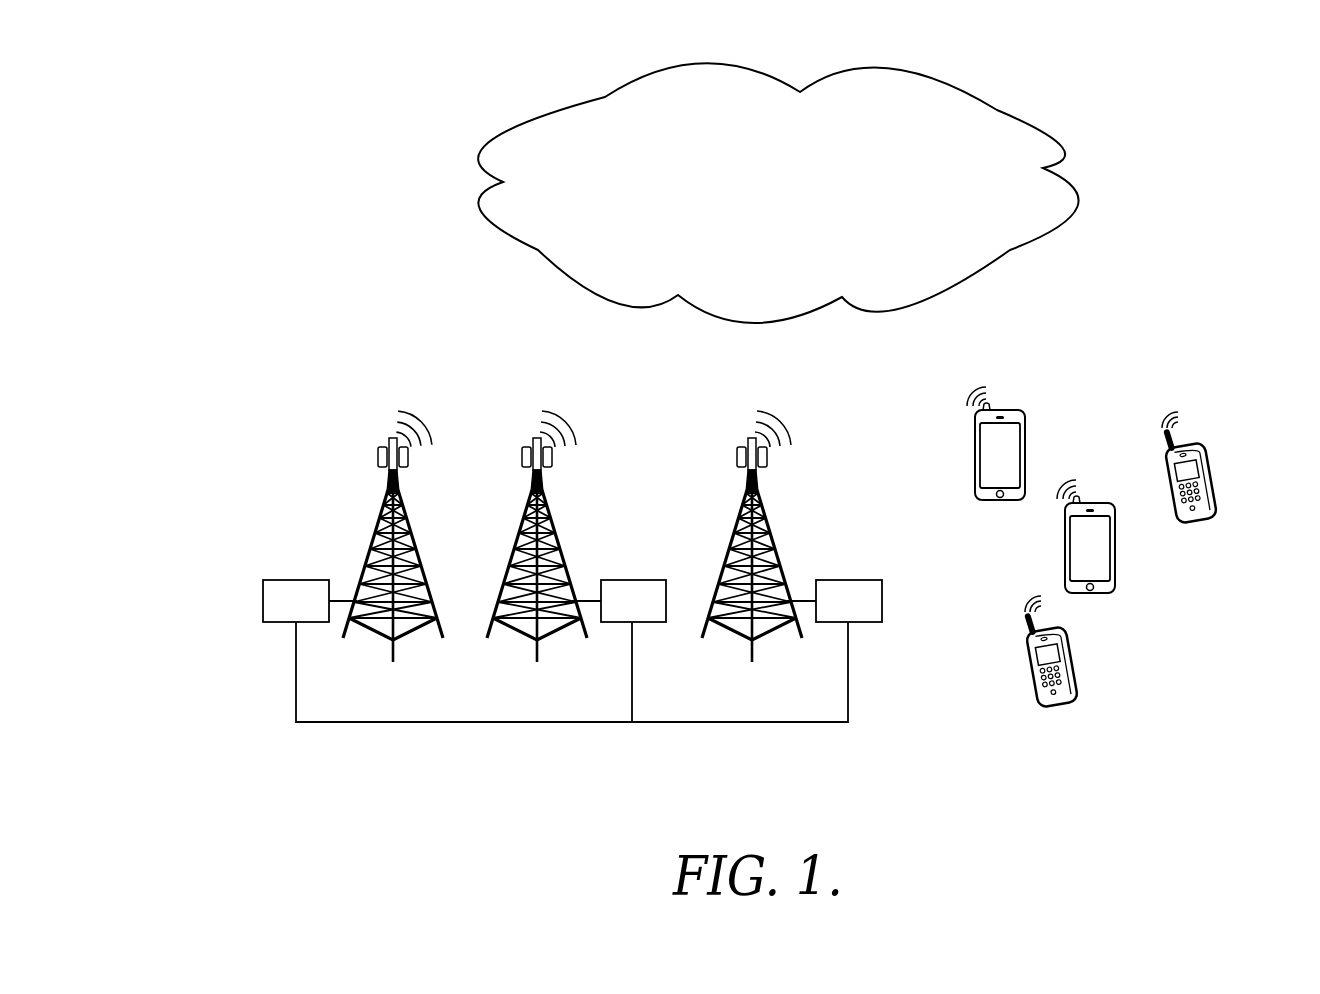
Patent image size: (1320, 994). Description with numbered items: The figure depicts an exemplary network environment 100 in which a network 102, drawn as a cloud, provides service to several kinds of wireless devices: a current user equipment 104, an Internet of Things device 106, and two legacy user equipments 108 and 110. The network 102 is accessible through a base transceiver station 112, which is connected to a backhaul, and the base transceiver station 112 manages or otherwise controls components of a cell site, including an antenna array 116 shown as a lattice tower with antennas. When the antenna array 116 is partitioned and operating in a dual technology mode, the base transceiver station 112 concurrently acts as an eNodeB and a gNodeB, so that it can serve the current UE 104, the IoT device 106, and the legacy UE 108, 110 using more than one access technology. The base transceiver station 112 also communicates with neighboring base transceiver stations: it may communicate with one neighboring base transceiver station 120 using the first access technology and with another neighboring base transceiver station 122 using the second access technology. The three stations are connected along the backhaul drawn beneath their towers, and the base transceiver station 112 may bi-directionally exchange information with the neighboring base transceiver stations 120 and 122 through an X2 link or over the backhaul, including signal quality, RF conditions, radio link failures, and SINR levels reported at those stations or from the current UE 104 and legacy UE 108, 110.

The network environment 100 is at (197, 111).
The network 102 is at (757, 204).
The current user equipment (UE) 104 is at (1025, 455).
The Internet of Things (IoT) device 106 is at (1115, 548).
The legacy UE 108 is at (1075, 668).
The legacy UE 110 is at (1212, 486).
The base transceiver station 112 is at (848, 580).
The antenna array 116 is at (767, 457).
The neighboring base transceiver station 120 is at (632, 580).
The neighboring base transceiver station 122 is at (296, 580).